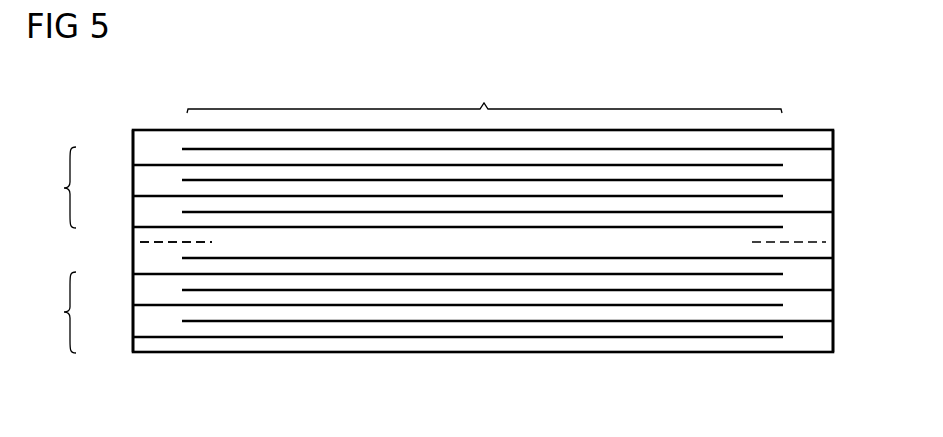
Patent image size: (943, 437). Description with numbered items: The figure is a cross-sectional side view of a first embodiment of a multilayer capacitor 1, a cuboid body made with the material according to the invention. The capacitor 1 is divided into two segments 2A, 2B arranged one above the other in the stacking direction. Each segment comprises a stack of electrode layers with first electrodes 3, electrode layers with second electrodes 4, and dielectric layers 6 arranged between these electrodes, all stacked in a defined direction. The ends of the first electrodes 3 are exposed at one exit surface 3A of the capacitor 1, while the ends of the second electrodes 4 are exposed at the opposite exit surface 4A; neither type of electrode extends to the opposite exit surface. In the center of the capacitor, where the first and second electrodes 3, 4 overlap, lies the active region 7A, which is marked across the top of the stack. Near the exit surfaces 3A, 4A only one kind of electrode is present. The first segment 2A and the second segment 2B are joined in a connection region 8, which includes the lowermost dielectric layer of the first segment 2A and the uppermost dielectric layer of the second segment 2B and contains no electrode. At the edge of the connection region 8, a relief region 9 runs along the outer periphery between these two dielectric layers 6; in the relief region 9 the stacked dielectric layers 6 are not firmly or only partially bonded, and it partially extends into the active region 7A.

The multilayer capacitor 1 is at (797, 118).
The first segment 2A is at (56, 187).
The second segment 2B is at (56, 312).
The first electrodes 3 is at (132, 165).
The exit surface 3A is at (128, 347).
The second electrodes 4 is at (834, 149).
The exit surface 4A is at (838, 307).
The dielectric layers 6 is at (132, 274).
The active region 7A is at (484, 92).
The connection region 8 is at (116, 230).
The relief region 9 is at (153, 252).